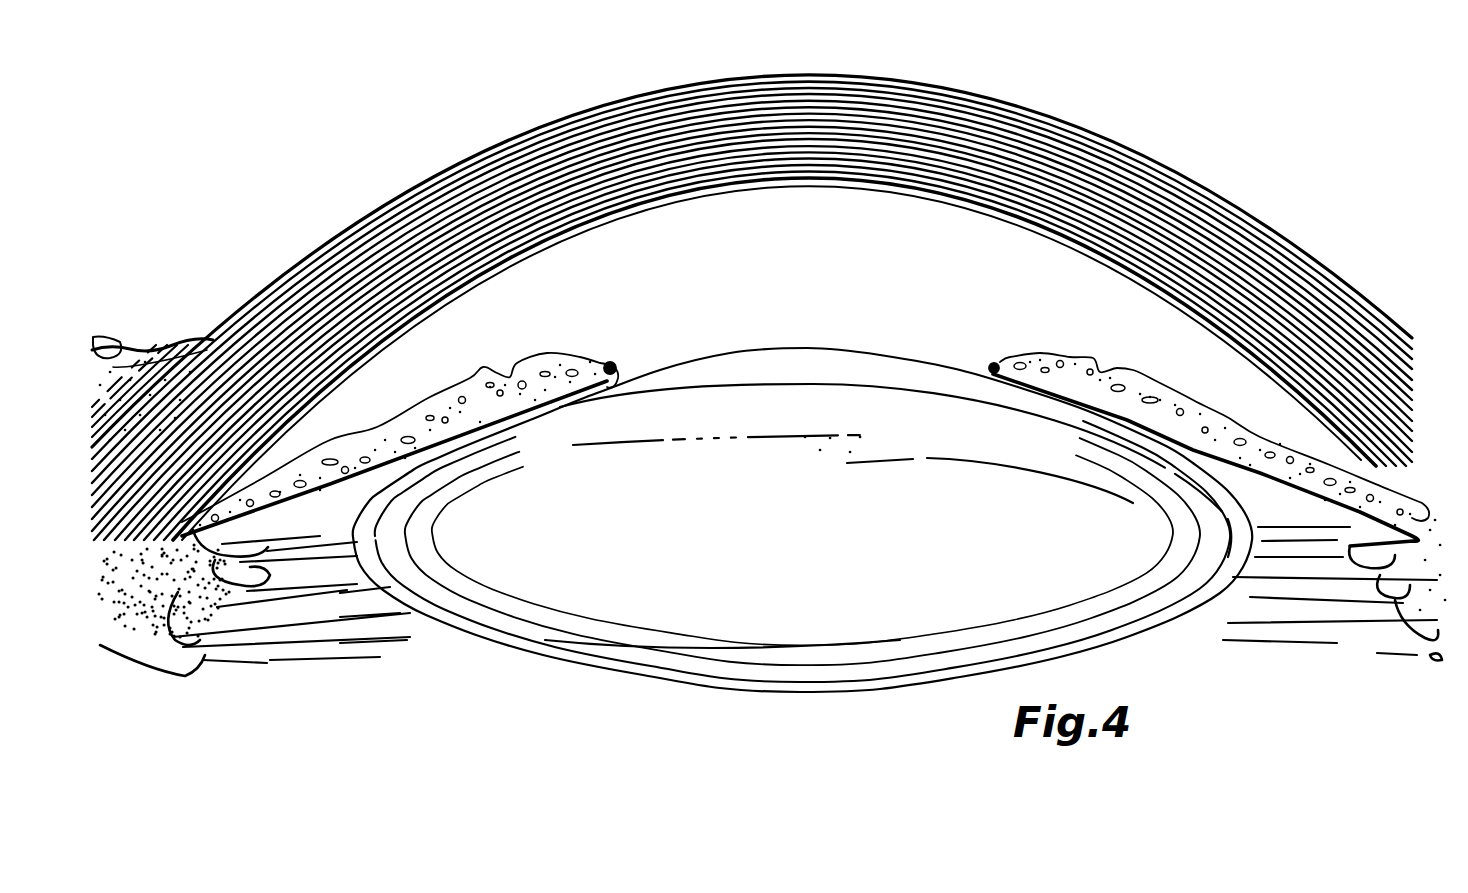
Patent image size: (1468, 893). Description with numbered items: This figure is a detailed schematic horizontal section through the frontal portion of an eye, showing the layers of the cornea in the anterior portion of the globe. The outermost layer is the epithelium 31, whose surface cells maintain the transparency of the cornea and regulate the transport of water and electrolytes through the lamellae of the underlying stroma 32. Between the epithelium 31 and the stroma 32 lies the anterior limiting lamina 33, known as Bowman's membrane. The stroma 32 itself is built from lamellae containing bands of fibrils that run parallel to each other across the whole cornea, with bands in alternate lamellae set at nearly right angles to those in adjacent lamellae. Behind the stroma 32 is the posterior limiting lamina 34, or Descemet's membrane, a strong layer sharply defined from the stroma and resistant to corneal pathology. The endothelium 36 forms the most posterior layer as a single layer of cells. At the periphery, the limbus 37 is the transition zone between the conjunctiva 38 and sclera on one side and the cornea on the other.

The epithelium 31 is at (699, 82).
The stroma 32 is at (800, 108).
The anterior limiting lamina 33 is at (773, 78).
The posterior limiting lamina 34 is at (752, 165).
The endothelium 36 is at (860, 187).
The limbus 37 is at (243, 310).
The conjunctiva 38 is at (198, 337).